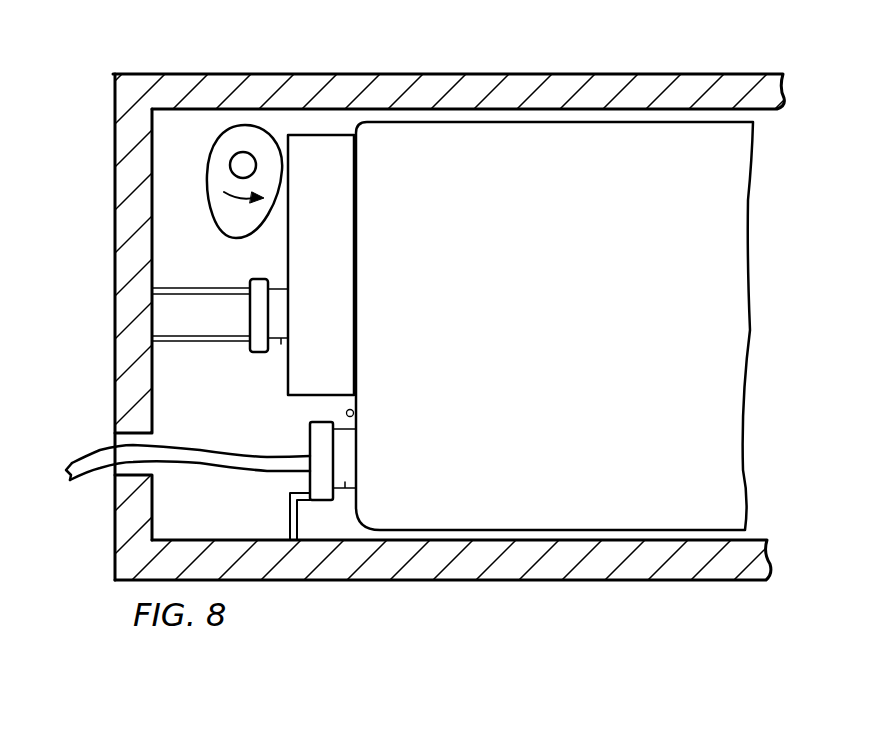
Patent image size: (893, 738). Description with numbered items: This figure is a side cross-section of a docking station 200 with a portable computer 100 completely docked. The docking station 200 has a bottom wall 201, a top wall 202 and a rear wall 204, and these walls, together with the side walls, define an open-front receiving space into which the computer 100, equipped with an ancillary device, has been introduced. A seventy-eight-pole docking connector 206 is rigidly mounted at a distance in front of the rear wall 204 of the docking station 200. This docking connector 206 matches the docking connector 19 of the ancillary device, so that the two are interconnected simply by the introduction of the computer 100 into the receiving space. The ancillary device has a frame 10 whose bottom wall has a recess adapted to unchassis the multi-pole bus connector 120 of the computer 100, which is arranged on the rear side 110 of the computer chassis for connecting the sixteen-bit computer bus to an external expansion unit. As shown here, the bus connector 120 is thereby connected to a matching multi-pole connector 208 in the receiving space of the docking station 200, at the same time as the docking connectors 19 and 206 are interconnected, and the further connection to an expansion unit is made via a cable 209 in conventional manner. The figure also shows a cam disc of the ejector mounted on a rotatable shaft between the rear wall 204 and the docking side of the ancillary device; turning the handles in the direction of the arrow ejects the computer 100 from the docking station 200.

The docking station 200 is at (186, 56).
The top wall 202 is at (622, 86).
The rear wall 204 is at (118, 200).
The bottom wall 201 is at (509, 572).
The frame 10 is at (318, 133).
The portable computer 100 is at (746, 162).
The docking connector 206 is at (252, 353).
The docking connector 19 is at (281, 343).
The multi-pole connector 208 is at (310, 433).
The rear side 110 is at (354, 413).
The cable 209 is at (92, 458).
The bus connector 120 is at (345, 482).